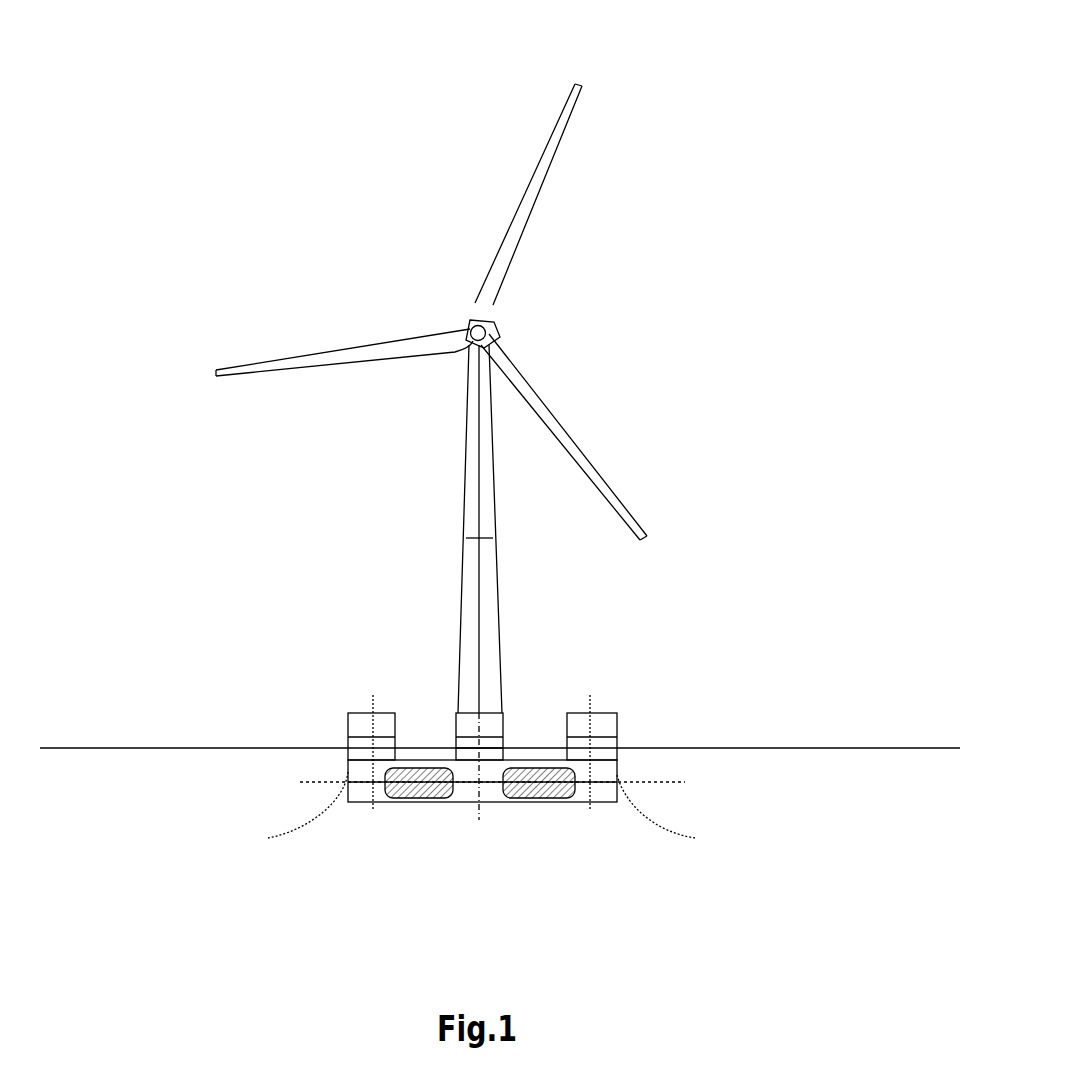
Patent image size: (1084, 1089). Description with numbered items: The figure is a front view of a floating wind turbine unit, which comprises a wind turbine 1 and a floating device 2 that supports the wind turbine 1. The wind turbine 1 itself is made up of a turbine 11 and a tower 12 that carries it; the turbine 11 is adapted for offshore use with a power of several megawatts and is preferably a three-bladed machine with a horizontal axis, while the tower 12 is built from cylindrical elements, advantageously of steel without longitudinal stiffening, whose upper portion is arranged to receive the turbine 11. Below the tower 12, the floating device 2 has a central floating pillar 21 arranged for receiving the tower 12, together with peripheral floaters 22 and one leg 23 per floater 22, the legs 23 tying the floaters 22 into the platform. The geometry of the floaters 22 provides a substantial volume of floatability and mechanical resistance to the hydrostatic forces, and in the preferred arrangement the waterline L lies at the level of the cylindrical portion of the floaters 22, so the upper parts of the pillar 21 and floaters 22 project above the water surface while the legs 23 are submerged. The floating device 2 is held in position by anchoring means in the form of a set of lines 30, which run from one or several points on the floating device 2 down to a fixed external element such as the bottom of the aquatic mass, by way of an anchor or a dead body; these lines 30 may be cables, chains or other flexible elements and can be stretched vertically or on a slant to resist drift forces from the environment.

The wind turbine 1 is at (652, 383).
The turbine 11 is at (492, 328).
The tower 12 is at (485, 583).
The floating device 2 is at (725, 765).
The central floating pillar 21 is at (493, 762).
The peripheral floater 22 is at (600, 737).
The leg 23 is at (545, 788).
The lines 30 is at (310, 826).
The waterline L is at (198, 750).